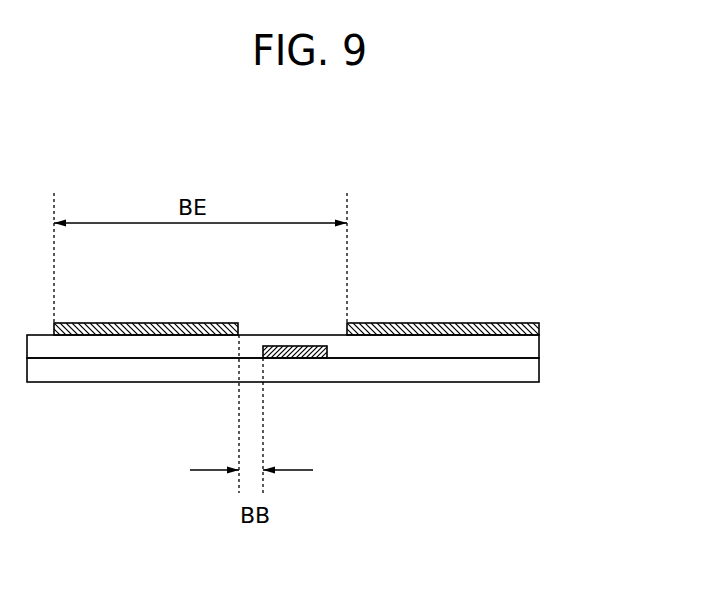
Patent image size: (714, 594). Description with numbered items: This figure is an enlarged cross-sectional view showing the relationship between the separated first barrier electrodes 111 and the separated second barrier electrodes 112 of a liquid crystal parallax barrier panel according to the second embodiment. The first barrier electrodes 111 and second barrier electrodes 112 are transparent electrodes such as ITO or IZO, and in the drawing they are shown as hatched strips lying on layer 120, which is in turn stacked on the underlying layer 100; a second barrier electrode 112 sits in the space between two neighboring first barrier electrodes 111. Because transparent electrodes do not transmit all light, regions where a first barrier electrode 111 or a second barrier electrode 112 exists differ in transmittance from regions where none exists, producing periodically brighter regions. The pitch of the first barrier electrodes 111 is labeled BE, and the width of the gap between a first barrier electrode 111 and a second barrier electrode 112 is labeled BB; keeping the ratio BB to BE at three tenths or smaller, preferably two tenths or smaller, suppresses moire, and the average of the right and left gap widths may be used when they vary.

The substrate 100 is at (525, 372).
The insulating layer 120 is at (527, 347).
The first barrier electrode 111 is at (505, 324).
The second barrier electrode 112 is at (317, 358).